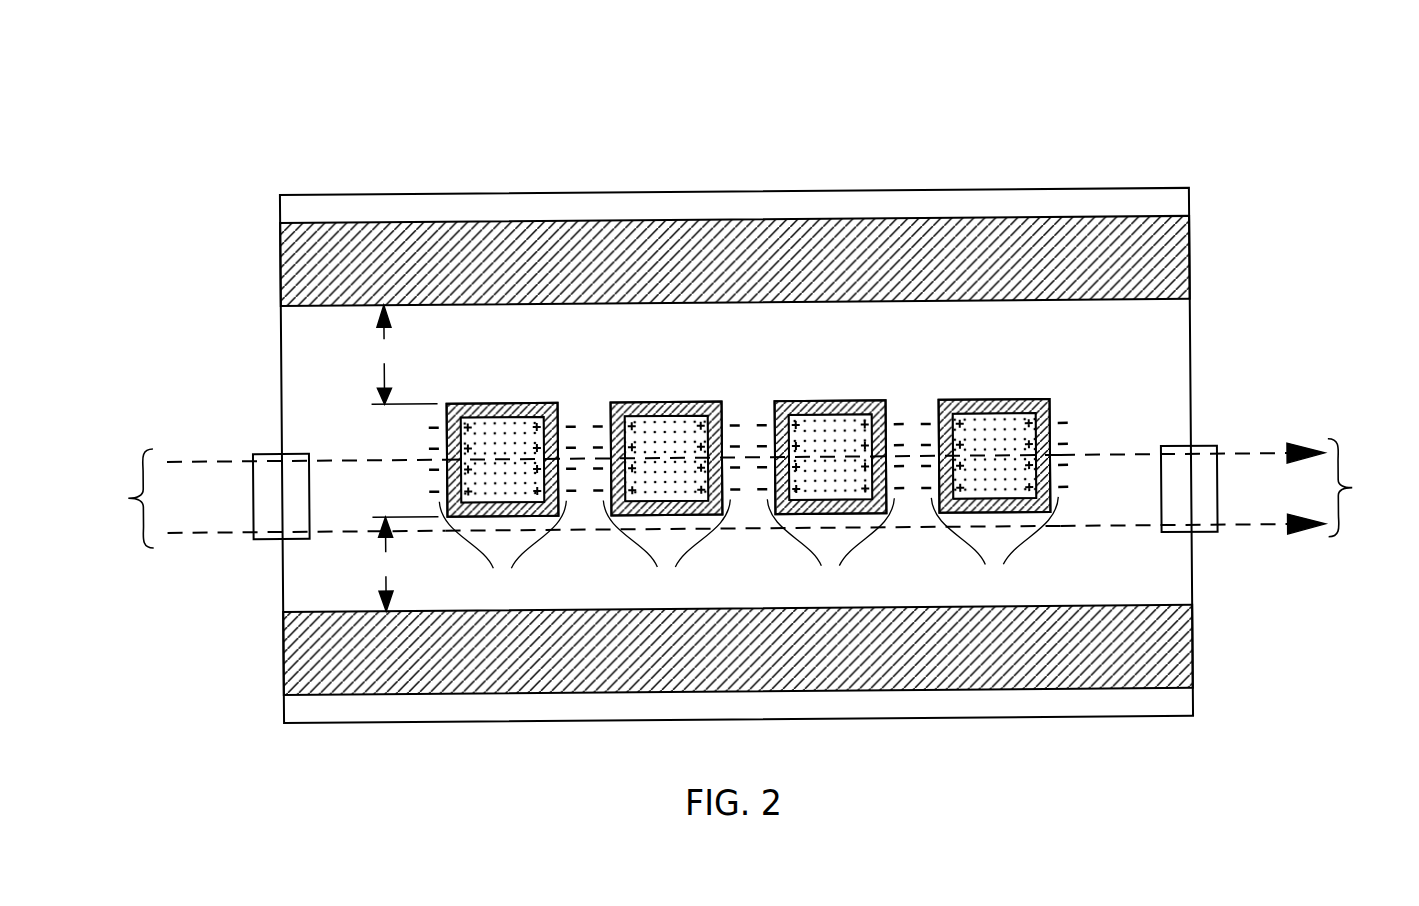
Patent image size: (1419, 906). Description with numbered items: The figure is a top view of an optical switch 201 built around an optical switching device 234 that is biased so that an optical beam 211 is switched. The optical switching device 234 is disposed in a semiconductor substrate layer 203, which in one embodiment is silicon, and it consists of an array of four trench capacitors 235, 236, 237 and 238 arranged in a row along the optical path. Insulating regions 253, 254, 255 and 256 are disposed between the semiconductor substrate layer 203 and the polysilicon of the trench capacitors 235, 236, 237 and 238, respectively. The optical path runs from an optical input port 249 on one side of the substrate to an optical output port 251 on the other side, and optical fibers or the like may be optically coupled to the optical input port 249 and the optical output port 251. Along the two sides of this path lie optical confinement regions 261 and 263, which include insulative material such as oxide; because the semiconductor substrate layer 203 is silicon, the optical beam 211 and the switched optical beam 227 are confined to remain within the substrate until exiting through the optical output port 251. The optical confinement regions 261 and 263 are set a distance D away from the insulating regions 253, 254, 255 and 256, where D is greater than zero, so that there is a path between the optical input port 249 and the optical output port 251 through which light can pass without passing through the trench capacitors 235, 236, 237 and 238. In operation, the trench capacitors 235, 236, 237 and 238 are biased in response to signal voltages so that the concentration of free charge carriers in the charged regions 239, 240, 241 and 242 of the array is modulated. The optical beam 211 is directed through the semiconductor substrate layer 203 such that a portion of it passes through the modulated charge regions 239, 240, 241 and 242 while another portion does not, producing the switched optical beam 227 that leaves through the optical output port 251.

The optical switch 201 is at (1086, 112).
The semiconductor substrate layer 203 is at (1191, 361).
The optical beam 211 is at (263, 498).
The switched optical beam 227 is at (1236, 488).
The optical switching device 234 is at (1060, 390).
The trench capacitor 235 is at (500, 405).
The trench capacitor 236 is at (664, 405).
The trench capacitor 237 is at (828, 405).
The trench capacitor 238 is at (992, 405).
The charged region 239 is at (503, 501).
The charged region 240 is at (667, 499).
The charged region 241 is at (831, 498).
The charged region 242 is at (995, 497).
The optical input port 249 is at (270, 454).
The optical output port 251 is at (1195, 452).
The insulating region 253 is at (516, 405).
The insulating region 254 is at (680, 405).
The insulating region 255 is at (844, 405).
The insulating region 256 is at (1008, 405).
The optical confinement region 261 is at (1191, 272).
The optical confinement region 263 is at (1191, 657).